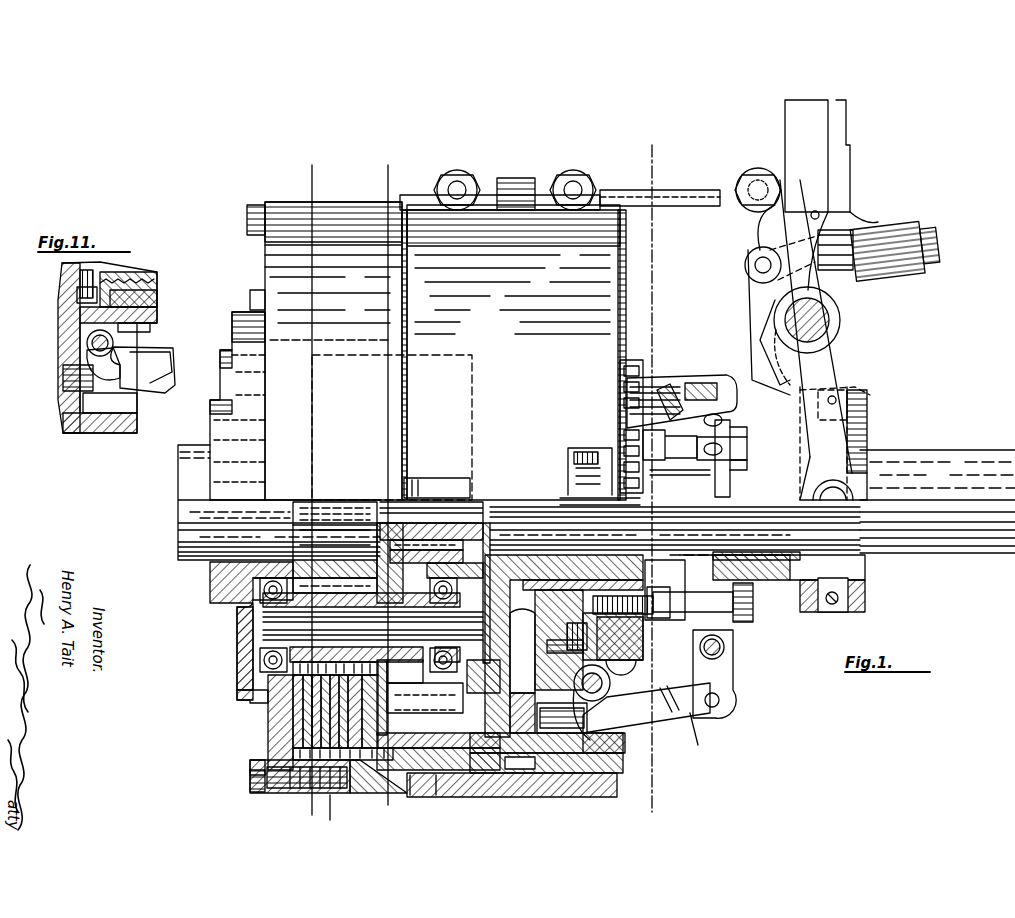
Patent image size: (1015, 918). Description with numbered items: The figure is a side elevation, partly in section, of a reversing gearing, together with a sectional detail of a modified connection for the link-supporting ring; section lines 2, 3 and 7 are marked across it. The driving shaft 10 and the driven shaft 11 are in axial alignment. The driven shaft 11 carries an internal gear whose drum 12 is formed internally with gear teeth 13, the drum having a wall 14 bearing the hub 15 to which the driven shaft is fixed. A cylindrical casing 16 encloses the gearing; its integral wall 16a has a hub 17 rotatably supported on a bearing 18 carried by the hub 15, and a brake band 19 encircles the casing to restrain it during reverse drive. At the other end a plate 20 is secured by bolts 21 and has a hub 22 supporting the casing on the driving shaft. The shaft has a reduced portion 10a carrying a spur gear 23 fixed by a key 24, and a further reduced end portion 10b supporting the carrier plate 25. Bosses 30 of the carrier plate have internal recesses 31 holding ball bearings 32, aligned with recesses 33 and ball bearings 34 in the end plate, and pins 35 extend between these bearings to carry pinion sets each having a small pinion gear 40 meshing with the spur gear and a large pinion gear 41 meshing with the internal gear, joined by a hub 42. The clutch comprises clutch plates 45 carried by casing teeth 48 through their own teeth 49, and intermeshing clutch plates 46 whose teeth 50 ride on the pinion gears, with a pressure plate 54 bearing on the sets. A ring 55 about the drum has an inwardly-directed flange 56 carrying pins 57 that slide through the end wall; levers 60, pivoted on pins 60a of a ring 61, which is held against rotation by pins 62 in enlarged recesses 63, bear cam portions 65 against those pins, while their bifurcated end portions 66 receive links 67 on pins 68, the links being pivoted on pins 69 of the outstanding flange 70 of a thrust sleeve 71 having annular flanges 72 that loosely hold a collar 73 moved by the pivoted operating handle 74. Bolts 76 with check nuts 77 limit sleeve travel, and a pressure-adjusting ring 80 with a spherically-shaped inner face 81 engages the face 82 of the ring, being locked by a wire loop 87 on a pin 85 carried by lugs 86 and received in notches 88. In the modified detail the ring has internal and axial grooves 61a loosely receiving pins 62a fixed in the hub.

In FIG. 1, the section line 2 is at (333, 492).
In FIG. 1, the section line 3 is at (385, 489).
In FIG. 1, the section line 7 is at (649, 480).
In FIG. 1, the driving shaft 10 is at (190, 478).
In FIG. 1, the reduced portion 10a is at (340, 510).
In FIG. 1, the end portion 10b is at (418, 545).
In FIG. 1, the driven shaft 11 is at (962, 540).
In FIG. 1, the drum 12 is at (440, 797).
In FIG. 1, the gear teeth 13 is at (418, 797).
In FIG. 1, the wall 14 is at (522, 651).
In FIG. 1, the hub 15 is at (545, 565).
In FIG. 1, the cylindrical casing 16 is at (455, 832).
In FIG. 11, the integral wall 16a is at (72, 312).
In FIG. 11, the hub 17 is at (156, 278).
In FIG. 1, the hub 17 is at (640, 622).
In FIG. 1, the bearing 18 is at (665, 588).
In FIG. 1, the brake band 19 is at (482, 812).
In FIG. 1, the plate 20 is at (266, 725).
In FIG. 1, the bolts 21 is at (246, 222).
In FIG. 1, the hub 22 is at (225, 600).
In FIG. 1, the spur gear 23 is at (340, 575).
In FIG. 1, the key 24 is at (310, 512).
In FIG. 1, the carrier plate 25 is at (490, 525).
In FIG. 1, the bosses 30 is at (445, 565).
In FIG. 1, the internal recesses 31 is at (452, 668).
In FIG. 1, the ball bearings 32 is at (452, 596).
In FIG. 1, the recesses 33 is at (240, 650).
In FIG. 1, the ball bearings 34 is at (262, 672).
In FIG. 1, the pins 35 is at (373, 626).
In FIG. 1, the small pinion gear 40 is at (262, 700).
In FIG. 1, the large pinion gear 41 is at (422, 498).
In FIG. 1, the hub 42 is at (420, 697).
In FIG. 1, the clutch plates 45 is at (300, 758).
In FIG. 1, the clutch plates 46 is at (296, 742).
In FIG. 1, the teeth 48 is at (298, 792).
In FIG. 1, the teeth 49 is at (334, 819).
In FIG. 1, the teeth 50 is at (310, 660).
In FIG. 1, the pressure plate 54 is at (352, 793).
In FIG. 1, the ring 55 is at (505, 797).
In FIG. 1, the inwardly-directed flange 56 is at (540, 797).
In FIG. 11, the pins 57 is at (63, 380).
In FIG. 1, the pins 57 is at (567, 797).
In FIG. 11, the levers 60 is at (152, 384).
In FIG. 1, the levers 60 is at (660, 378).
In FIG. 11, the pins 60a is at (116, 352).
In FIG. 1, the pins 60a is at (600, 692).
In FIG. 11, the ring 61 is at (94, 280).
In FIG. 1, the ring 61 is at (610, 675).
In FIG. 11, the internal and axial grooves 61a is at (77, 292).
In FIG. 11, the pins 62 is at (156, 300).
In FIG. 1, the pins 62 is at (640, 640).
In FIG. 11, the pins 62a is at (66, 322).
In FIG. 1, the enlarged recesses 63 is at (573, 592).
In FIG. 1, the cam portions 65 is at (600, 797).
In FIG. 1, the bifurcated end portions 66 is at (698, 745).
In FIG. 1, the links 67 is at (733, 665).
In FIG. 1, the pins 68 is at (720, 700).
In FIG. 1, the pins 69 is at (725, 647).
In FIG. 1, the outstanding flange 70 is at (755, 610).
In FIG. 1, the thrust sleeve 71 is at (775, 582).
In FIG. 1, the annular flanges 72 is at (808, 612).
In FIG. 1, the collar 73 is at (845, 590).
In FIG. 1, the pivoted operating handle 74 is at (812, 168).
In FIG. 1, the bolts 76 is at (668, 595).
In FIG. 1, the check nuts 77 is at (685, 545).
In FIG. 1, the pressure-adjusting ring 80 is at (642, 345).
In FIG. 11, the spherically-shaped inner face 81 is at (156, 320).
In FIG. 1, the spherically-shaped inner face 81 is at (640, 665).
In FIG. 11, the face 82 is at (114, 340).
In FIG. 1, the face 82 is at (644, 636).
In FIG. 1, the pin 85 is at (565, 497).
In FIG. 1, the lugs 86 is at (585, 458).
In FIG. 1, the wire loop 87 is at (668, 483).
In FIG. 1, the notches 88 is at (622, 360).